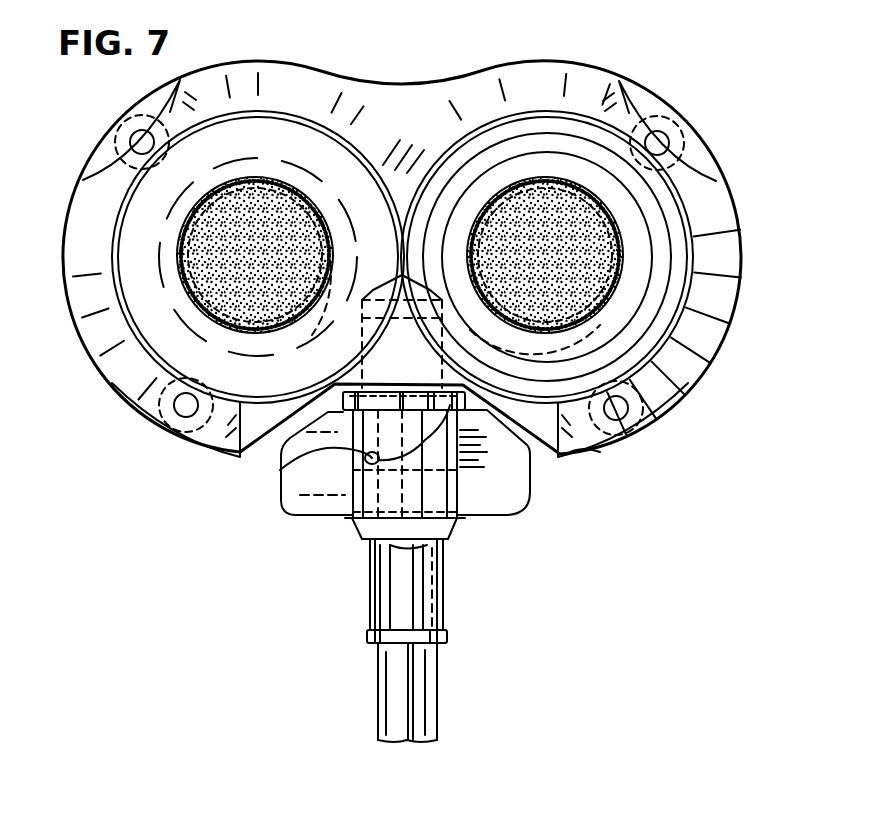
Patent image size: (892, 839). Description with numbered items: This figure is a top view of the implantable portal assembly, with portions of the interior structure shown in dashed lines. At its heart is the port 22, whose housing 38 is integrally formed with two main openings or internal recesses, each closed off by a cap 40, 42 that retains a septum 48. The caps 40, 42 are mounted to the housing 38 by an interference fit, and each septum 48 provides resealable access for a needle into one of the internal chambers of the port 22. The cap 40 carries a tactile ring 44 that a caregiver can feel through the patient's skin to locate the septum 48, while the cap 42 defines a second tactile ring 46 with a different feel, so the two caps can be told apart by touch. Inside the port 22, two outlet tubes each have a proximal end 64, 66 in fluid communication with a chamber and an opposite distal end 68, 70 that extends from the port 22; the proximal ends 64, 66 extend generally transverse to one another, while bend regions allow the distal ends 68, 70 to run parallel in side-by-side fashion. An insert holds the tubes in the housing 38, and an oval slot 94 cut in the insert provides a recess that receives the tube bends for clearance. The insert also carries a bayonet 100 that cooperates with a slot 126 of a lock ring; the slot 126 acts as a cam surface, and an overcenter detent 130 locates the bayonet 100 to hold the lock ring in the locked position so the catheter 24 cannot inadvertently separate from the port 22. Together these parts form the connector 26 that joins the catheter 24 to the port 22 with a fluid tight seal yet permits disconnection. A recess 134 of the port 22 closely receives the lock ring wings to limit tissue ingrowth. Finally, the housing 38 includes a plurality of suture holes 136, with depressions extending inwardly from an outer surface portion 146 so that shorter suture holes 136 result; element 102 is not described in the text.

The port 22 is at (402, 236).
The catheter 24 is at (452, 692).
The connector 26 is at (424, 490).
The housing 38 is at (248, 202).
The cap 40 is at (258, 220).
The cap 42 is at (547, 220).
The tactile ring 44 is at (126, 268).
The second tactile ring 46 is at (606, 257).
The septum 48 is at (240, 268).
The proximal end 64 is at (345, 287).
The proximal end 66 is at (535, 323).
The distal end 68 is at (368, 580).
The distal end 70 is at (447, 583).
The slot 94 is at (372, 407).
The bayonet 100 is at (330, 489).
The flange 102 is at (452, 631).
The slot 126 is at (527, 472).
The detent 130 is at (326, 458).
The recess 134 is at (613, 473).
The suture hole 136 is at (403, 278).
The outer surface portion 146 is at (630, 254).